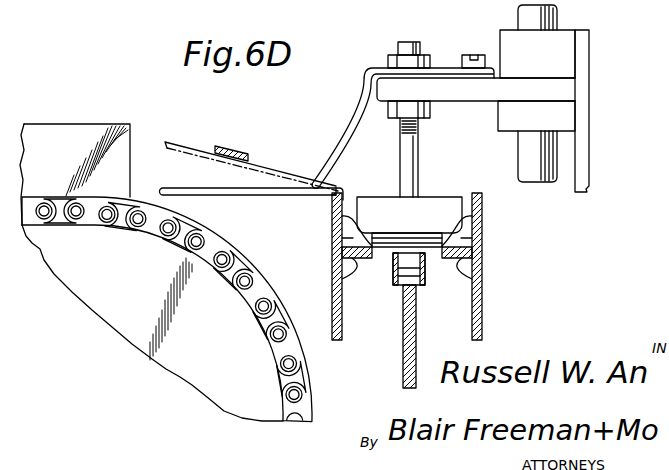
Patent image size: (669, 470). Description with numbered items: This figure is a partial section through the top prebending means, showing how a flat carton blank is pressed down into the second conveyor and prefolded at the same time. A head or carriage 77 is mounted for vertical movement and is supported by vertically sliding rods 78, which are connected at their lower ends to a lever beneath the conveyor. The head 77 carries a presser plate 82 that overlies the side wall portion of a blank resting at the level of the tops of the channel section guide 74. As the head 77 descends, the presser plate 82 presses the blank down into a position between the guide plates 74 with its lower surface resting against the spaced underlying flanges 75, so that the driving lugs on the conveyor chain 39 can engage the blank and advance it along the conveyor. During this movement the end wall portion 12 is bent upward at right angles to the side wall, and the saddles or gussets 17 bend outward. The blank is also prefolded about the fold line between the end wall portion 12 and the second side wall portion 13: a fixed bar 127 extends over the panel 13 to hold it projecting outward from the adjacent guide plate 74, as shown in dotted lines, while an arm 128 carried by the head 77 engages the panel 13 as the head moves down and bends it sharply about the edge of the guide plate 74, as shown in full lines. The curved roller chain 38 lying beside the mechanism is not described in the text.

The end wall portion 12 is at (343, 193).
The second side wall portion 13 is at (263, 188).
The saddles or gussets 17 is at (350, 239).
The roller chain 38 is at (212, 240).
The conveyor chain 39 is at (397, 283).
The channel section guide 74 is at (332, 230).
The flanges 75 is at (334, 277).
The head or carriage 77 is at (457, 97).
The sliding rods 78 is at (527, 148).
The presser plate 82 is at (428, 210).
The fixed bar 127 is at (237, 145).
The arm 128 is at (350, 132).